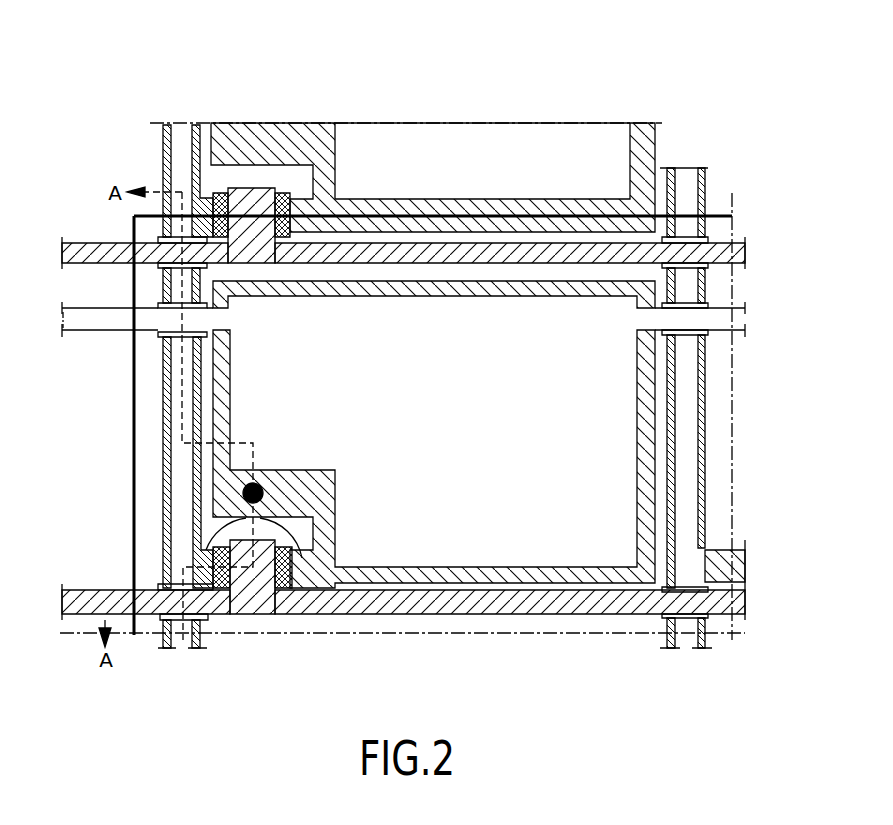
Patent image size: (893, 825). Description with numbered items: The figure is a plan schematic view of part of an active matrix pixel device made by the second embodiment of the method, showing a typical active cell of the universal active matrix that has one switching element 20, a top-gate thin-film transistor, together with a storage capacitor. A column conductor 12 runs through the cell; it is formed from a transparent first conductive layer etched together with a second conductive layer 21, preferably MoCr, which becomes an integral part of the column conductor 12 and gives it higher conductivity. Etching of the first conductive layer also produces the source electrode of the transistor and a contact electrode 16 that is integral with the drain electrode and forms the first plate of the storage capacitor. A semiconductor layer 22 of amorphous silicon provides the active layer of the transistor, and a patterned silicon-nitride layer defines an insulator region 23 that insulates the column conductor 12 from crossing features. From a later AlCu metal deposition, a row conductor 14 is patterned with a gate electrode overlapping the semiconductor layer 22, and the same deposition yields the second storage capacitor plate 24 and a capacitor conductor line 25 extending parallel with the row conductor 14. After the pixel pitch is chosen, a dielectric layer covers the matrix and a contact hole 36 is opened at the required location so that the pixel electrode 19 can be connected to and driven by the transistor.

The column conductor 12 is at (195, 125).
The row conductor 14 is at (82, 243).
The contact electrode 16 is at (640, 148).
The pixel electrode 19 is at (135, 527).
The switching element 20 is at (247, 618).
The second conductive layer 21 is at (178, 140).
The semiconductor layer 22 is at (285, 588).
The insulator region 23 is at (163, 636).
The second storage capacitor plate 24 is at (618, 488).
The capacitor conductor line 25 is at (88, 318).
The contact hole 36 is at (243, 490).